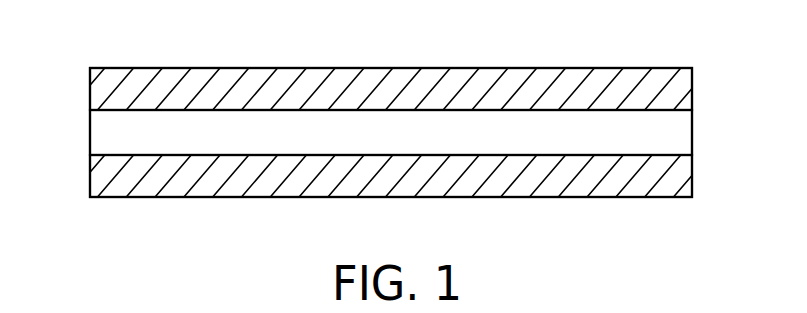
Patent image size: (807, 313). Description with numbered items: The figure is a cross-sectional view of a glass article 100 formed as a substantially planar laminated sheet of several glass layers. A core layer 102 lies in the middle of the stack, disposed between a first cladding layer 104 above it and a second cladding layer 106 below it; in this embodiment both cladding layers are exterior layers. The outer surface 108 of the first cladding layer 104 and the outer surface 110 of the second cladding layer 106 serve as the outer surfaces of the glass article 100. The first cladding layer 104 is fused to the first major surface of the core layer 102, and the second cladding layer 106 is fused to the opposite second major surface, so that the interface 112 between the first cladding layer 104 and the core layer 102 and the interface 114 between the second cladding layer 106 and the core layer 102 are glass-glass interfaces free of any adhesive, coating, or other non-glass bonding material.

The glass article 100 is at (68, 55).
The core layer 102 is at (692, 133).
The first cladding layer 104 is at (692, 88).
The second cladding layer 106 is at (692, 181).
The outer surface of first cladding layer 108 is at (555, 68).
The outer surface of second cladding layer 110 is at (637, 197).
The interface between first cladding layer and core layer 112 is at (343, 110).
The interface between second cladding layer and core layer 114 is at (293, 155).